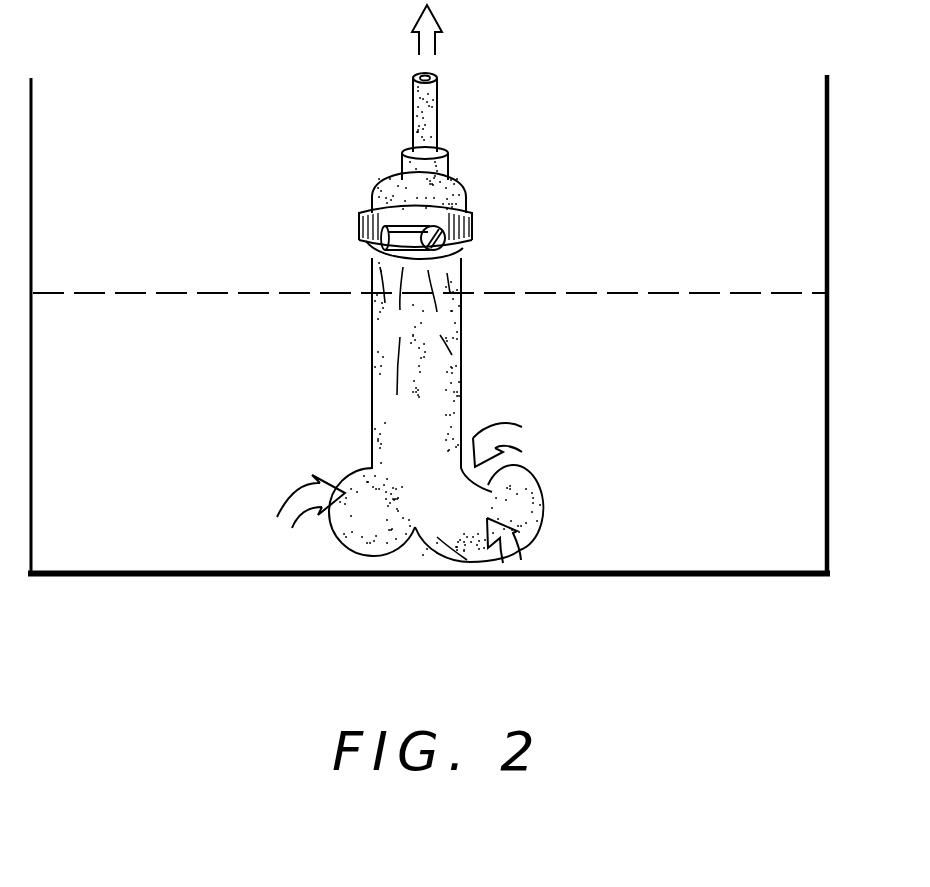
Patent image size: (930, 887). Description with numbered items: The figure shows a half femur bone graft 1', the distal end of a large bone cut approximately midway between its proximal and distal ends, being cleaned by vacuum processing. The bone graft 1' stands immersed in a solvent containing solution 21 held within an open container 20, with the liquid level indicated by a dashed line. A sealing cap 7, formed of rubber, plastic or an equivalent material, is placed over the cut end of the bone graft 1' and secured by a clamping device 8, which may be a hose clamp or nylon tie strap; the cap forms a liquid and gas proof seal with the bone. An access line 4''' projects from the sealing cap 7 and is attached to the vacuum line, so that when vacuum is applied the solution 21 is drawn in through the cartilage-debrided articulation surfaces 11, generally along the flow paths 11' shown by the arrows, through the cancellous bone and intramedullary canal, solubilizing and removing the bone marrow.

The bone graft 1' is at (448, 375).
The access line 4''' is at (470, 112).
The sealing cap 7 is at (468, 188).
The clamping device 8 is at (477, 233).
The articulation surfaces 11 is at (464, 502).
The flow paths 11' is at (399, 493).
The container 20 is at (303, 577).
The solution 21 is at (429, 475).